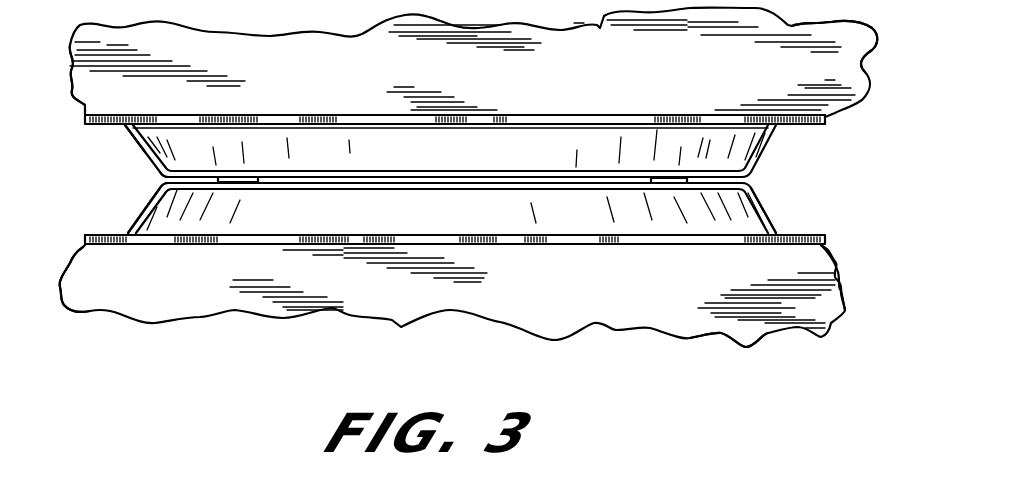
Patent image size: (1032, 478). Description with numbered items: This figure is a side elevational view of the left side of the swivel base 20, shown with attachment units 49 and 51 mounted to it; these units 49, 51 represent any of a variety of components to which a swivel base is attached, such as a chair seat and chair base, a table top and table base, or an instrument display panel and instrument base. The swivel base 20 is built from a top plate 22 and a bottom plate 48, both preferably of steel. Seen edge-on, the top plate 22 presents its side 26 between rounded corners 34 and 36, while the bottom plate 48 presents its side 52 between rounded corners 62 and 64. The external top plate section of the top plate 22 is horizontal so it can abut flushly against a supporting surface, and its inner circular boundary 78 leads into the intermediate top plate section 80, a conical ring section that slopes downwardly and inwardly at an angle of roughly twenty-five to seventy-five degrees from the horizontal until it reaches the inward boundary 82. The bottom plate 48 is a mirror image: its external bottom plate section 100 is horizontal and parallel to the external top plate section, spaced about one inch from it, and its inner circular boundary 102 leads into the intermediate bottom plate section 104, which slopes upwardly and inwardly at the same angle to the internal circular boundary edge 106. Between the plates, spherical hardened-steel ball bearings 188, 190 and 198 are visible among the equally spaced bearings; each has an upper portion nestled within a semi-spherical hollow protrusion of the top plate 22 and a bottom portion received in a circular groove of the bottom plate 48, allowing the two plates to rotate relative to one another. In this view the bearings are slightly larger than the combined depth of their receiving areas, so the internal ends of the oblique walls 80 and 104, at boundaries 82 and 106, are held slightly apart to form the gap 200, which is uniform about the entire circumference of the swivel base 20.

The swivel base 20 is at (598, 87).
The top plate 22 is at (282, 114).
The side 26 is at (478, 116).
The rounded corner 34 is at (72, 66).
The rounded corner 36 is at (824, 116).
The bottom plate 48 is at (566, 245).
The attachment unit 49 is at (790, 34).
The attachment unit 51 is at (736, 327).
The side 52 is at (434, 241).
The rounded corner 62 is at (85, 245).
The rounded corner 64 is at (836, 272).
The inner circular boundary 78 is at (127, 128).
The intermediate top plate section 80 is at (207, 157).
The inward boundary 82 is at (157, 166).
The external bottom plate section 100 is at (795, 229).
The circular boundary 102 is at (131, 231).
The intermediate bottom plate section 104 is at (152, 238).
The internal circular boundary edge 106 is at (157, 188).
The ball bearing 188 is at (467, 174).
The ball bearing 190 is at (247, 182).
The ball bearing 198 is at (669, 183).
The gap 200 is at (357, 181).